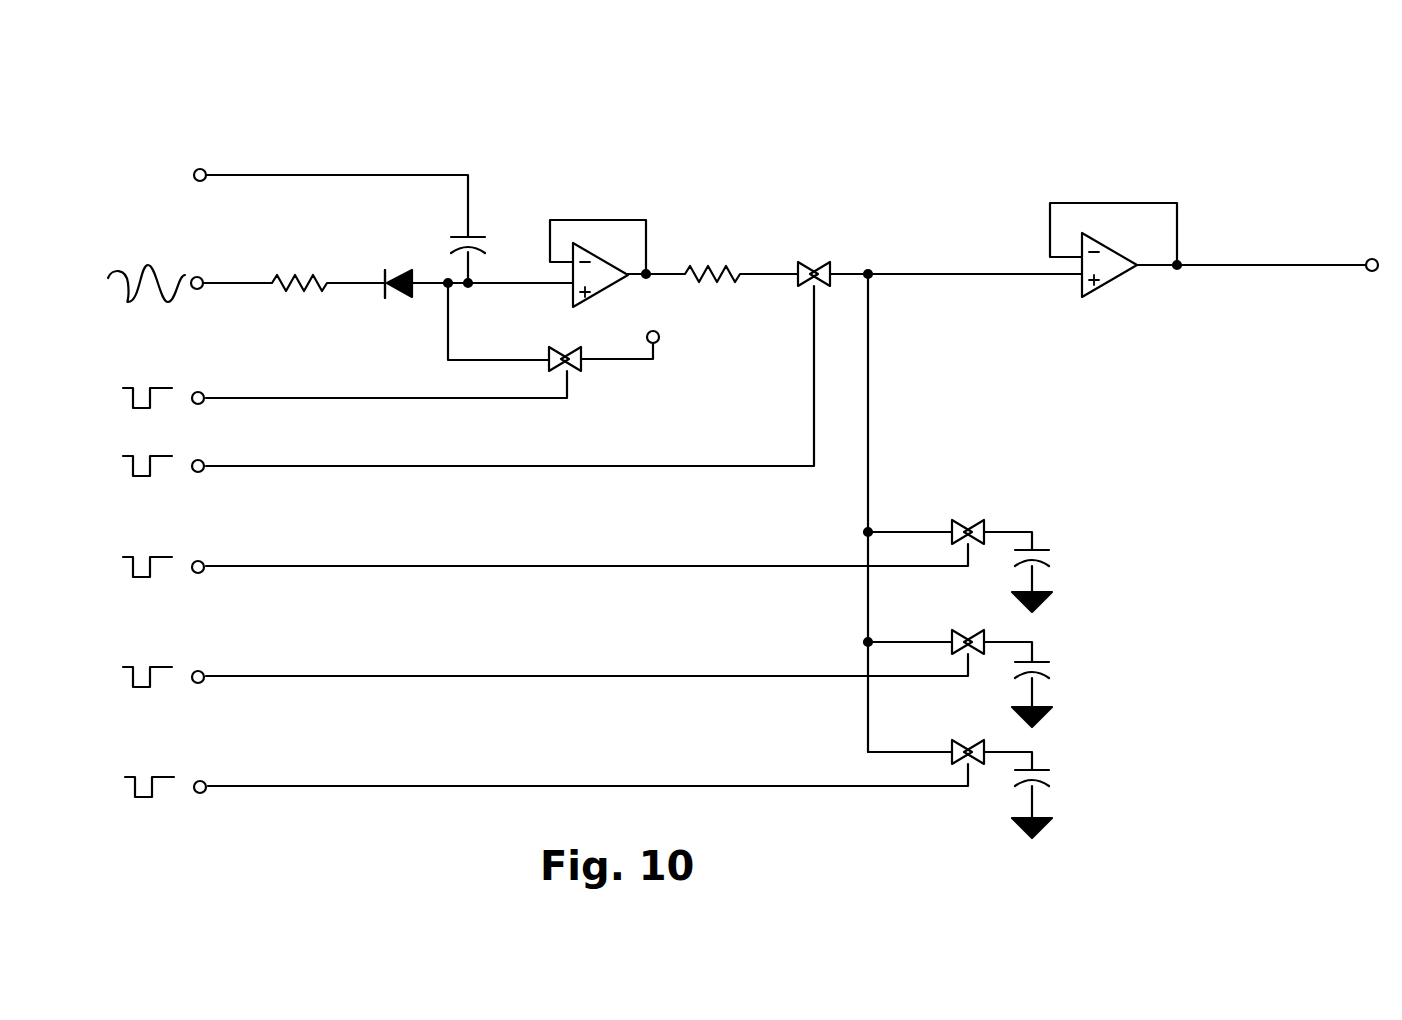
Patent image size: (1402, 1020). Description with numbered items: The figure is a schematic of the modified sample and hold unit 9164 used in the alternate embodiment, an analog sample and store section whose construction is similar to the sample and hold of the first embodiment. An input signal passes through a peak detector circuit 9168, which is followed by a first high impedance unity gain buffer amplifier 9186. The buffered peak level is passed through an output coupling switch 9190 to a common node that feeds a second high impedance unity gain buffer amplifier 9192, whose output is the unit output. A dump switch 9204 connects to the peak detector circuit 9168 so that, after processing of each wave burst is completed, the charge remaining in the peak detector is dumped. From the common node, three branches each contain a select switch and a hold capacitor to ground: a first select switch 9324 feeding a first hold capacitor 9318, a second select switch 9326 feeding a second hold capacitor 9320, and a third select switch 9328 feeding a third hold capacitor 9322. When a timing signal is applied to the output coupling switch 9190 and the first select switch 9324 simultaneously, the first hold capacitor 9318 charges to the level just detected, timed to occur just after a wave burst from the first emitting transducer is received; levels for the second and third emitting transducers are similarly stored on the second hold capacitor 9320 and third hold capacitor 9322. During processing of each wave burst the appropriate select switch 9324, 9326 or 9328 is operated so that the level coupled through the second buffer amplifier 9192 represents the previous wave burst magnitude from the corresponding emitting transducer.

The modified sample and hold unit 9164 is at (112, 138).
The peak detector circuit 9168 is at (437, 273).
The first high impedance unity gain buffer amplifier 9186 is at (603, 298).
The output coupling switch 9190 is at (812, 262).
The second high impedance unity gain buffer amplifier 9192 is at (1098, 290).
The dump switch 9204 is at (575, 370).
The first hold capacitor 9318 is at (1050, 550).
The second hold capacitor 9320 is at (1050, 661).
The third hold capacitor 9322 is at (1050, 770).
The first select switch 9324 is at (968, 520).
The second select switch 9326 is at (968, 630).
The third select switch 9328 is at (968, 748).